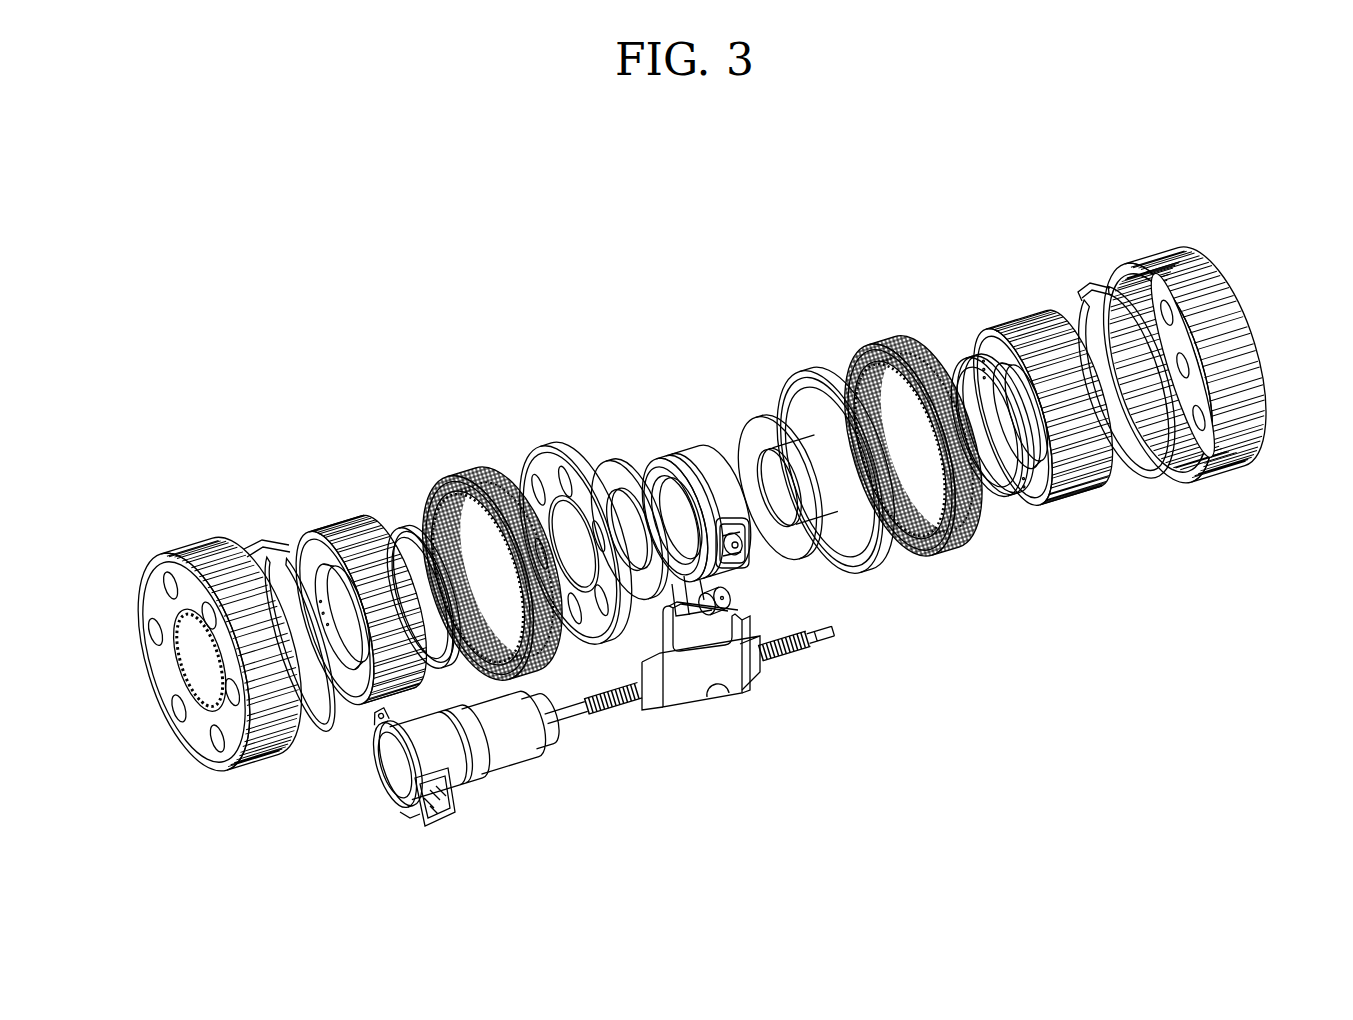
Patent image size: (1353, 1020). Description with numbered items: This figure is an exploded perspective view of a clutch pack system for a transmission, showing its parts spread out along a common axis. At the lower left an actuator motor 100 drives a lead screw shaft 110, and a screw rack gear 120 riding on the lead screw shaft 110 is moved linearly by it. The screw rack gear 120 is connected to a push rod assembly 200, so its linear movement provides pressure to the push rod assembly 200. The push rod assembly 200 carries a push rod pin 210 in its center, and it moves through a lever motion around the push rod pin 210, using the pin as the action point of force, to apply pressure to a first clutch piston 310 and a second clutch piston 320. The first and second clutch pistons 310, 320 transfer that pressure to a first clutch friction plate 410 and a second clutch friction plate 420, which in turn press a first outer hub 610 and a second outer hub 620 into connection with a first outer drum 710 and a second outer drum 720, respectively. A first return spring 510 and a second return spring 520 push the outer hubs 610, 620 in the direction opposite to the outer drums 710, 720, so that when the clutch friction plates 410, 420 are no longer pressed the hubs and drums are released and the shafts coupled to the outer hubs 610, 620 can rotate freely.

The actuator motor 100 is at (490, 762).
The lead screw shaft 110 is at (618, 710).
The screw rack gear 120 is at (718, 695).
The push rod assembly 200 is at (695, 453).
The push rod pin 210 is at (732, 603).
The first clutch piston 310 is at (563, 442).
The second clutch piston 320 is at (822, 370).
The first clutch friction plate 410 is at (470, 462).
The second clutch friction plate 420 is at (890, 333).
The first return spring 510 is at (407, 523).
The second return spring 520 is at (972, 358).
The first outer hub 610 is at (343, 520).
The second outer hub 620 is at (1028, 310).
The first outer drum 710 is at (196, 540).
The second outer drum 720 is at (1167, 243).